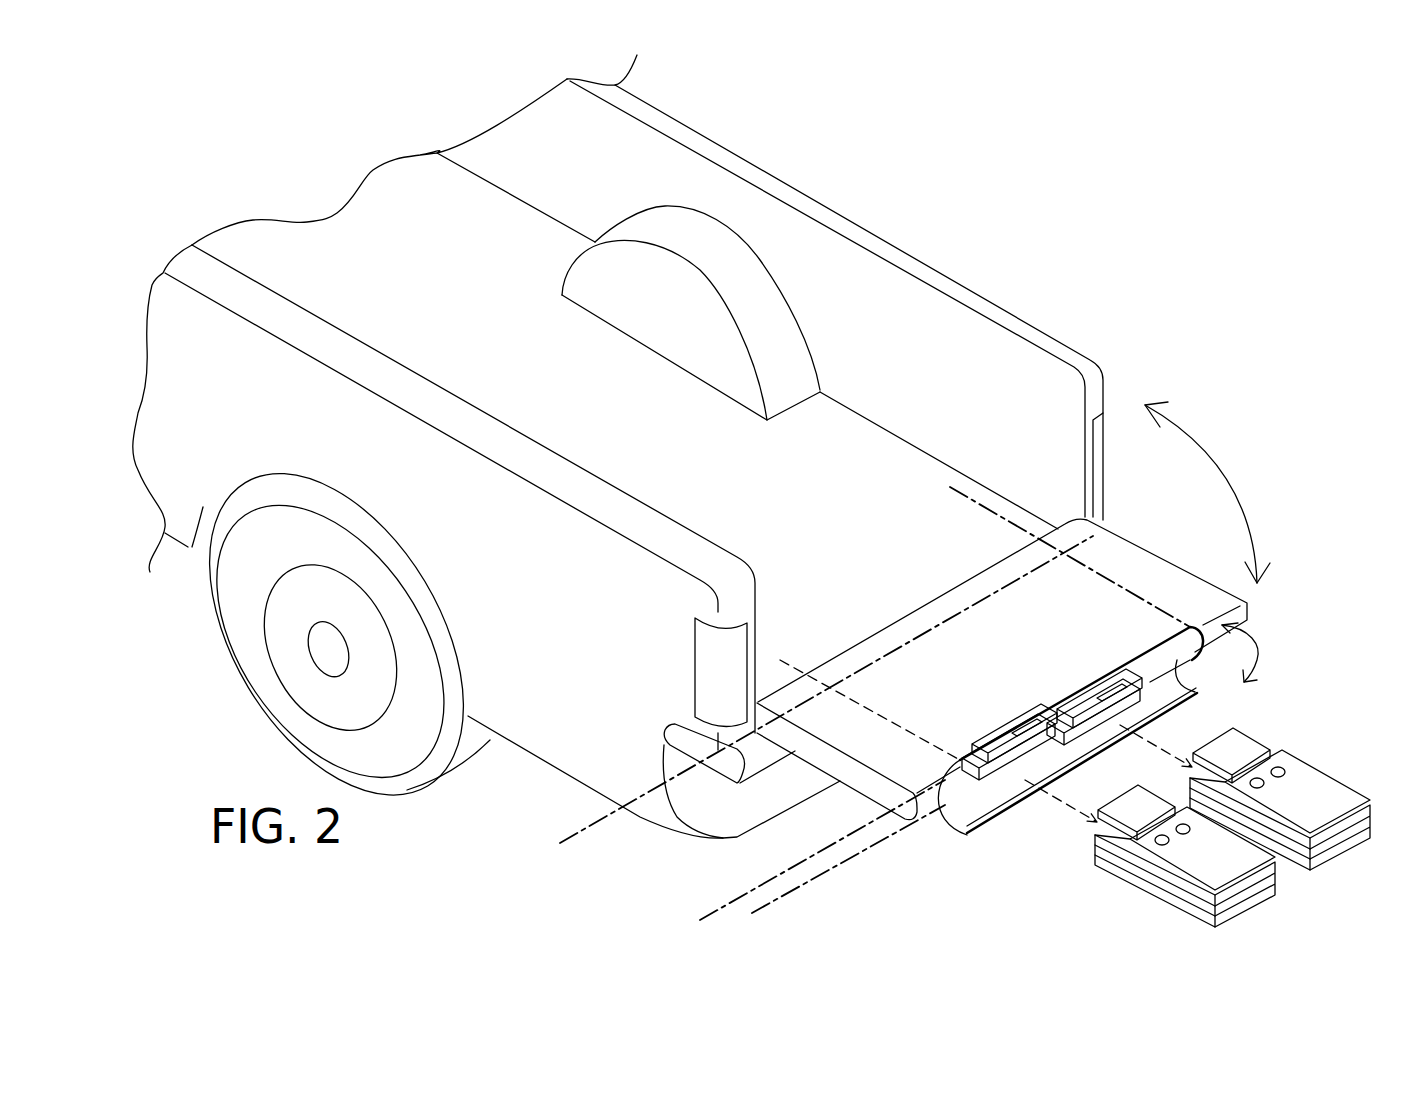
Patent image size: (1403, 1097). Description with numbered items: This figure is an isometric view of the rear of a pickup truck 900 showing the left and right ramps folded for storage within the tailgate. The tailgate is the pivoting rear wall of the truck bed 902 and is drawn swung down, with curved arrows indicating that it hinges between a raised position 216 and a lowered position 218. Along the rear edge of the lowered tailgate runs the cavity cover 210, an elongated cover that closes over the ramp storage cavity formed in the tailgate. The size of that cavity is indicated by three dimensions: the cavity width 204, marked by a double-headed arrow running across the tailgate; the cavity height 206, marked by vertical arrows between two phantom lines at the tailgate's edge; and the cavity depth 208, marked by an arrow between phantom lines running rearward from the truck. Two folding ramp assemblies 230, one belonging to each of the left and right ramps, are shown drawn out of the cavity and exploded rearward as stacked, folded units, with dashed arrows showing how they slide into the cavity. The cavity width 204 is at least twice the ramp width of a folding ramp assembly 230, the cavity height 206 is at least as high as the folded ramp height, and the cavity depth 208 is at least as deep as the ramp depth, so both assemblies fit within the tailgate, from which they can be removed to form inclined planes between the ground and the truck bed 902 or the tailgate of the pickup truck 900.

The pickup truck 900 is at (180, 488).
The truck bed 902 is at (830, 445).
The cavity width 204 is at (1010, 523).
The cavity height 206 is at (822, 783).
The cavity depth 208 is at (723, 903).
The cavity cover 210 is at (962, 813).
The raised position 216 is at (1207, 480).
The lowered position 218 is at (1275, 597).
The folding ramp assembly 230 is at (1193, 893).